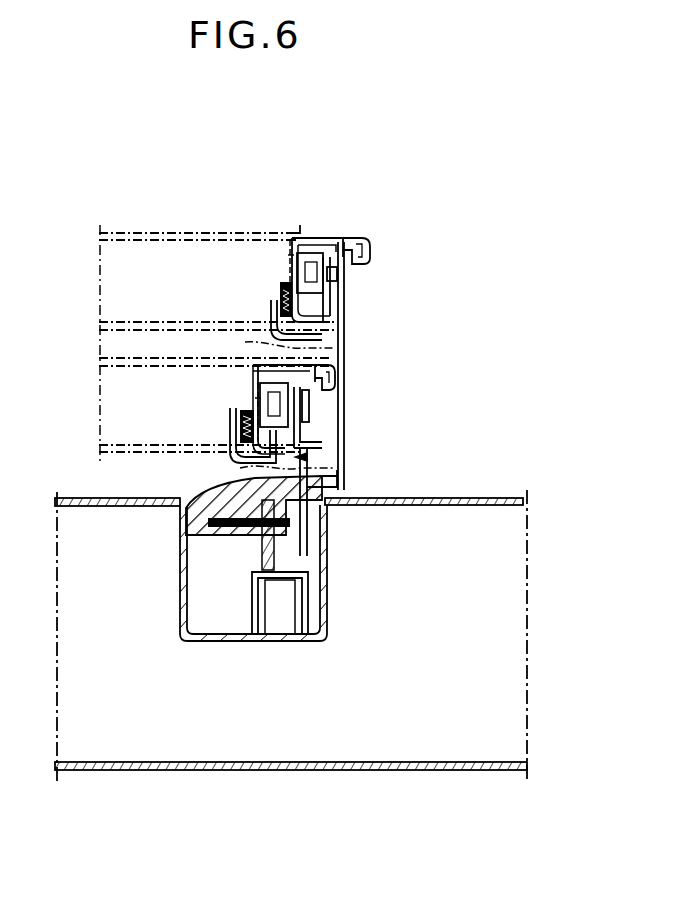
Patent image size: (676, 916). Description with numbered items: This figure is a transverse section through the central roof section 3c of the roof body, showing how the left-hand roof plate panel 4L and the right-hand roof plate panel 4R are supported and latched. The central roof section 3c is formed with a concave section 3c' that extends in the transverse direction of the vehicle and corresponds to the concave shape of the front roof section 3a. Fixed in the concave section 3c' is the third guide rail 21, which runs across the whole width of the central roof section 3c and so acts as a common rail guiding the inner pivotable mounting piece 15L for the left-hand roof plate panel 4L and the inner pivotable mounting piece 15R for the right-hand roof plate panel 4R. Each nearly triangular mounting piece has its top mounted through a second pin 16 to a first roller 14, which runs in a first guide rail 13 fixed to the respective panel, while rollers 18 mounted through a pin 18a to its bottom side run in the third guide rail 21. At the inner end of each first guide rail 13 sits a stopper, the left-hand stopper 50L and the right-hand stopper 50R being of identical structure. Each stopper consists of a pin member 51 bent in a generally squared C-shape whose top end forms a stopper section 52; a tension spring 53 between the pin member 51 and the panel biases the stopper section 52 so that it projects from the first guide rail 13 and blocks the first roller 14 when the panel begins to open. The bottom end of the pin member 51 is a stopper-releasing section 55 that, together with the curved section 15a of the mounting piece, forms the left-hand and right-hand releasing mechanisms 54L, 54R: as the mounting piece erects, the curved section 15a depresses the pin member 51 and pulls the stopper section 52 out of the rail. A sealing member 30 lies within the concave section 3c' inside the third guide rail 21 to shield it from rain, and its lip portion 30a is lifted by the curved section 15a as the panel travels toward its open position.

The front roof section 3a is at (512, 498).
The central roof section 3c is at (53, 603).
The concave section 3c' is at (291, 705).
The right-hand roof plate panel 4R is at (118, 330).
The left-hand roof plate panel 4L is at (288, 235).
The first guide rail 13 is at (305, 260).
The first roller 14 is at (340, 240).
The inner pivotable mounting piece for the left-hand roof plate panel 15L is at (340, 298).
The inner pivotable mounting piece for the right-hand roof plate panel 15R is at (318, 428).
The curved section 15a is at (320, 480).
The second pin 16 is at (340, 280).
The rollers 18 is at (280, 548).
The pin 18a is at (318, 560).
The third guide rail 21 is at (262, 540).
The sealing member 30 is at (195, 482).
The lip portion 30a is at (335, 476).
The left-hand stopper 50L is at (293, 275).
The right-hand stopper 50R is at (232, 417).
The pin member 51 is at (272, 300).
The stopper section 52 is at (293, 248).
The tension spring 53 is at (278, 292).
The left-hand releasing mechanism 54L is at (356, 332).
The right-hand releasing mechanism 54R is at (307, 457).
The stopper-releasing section 55 is at (280, 345).